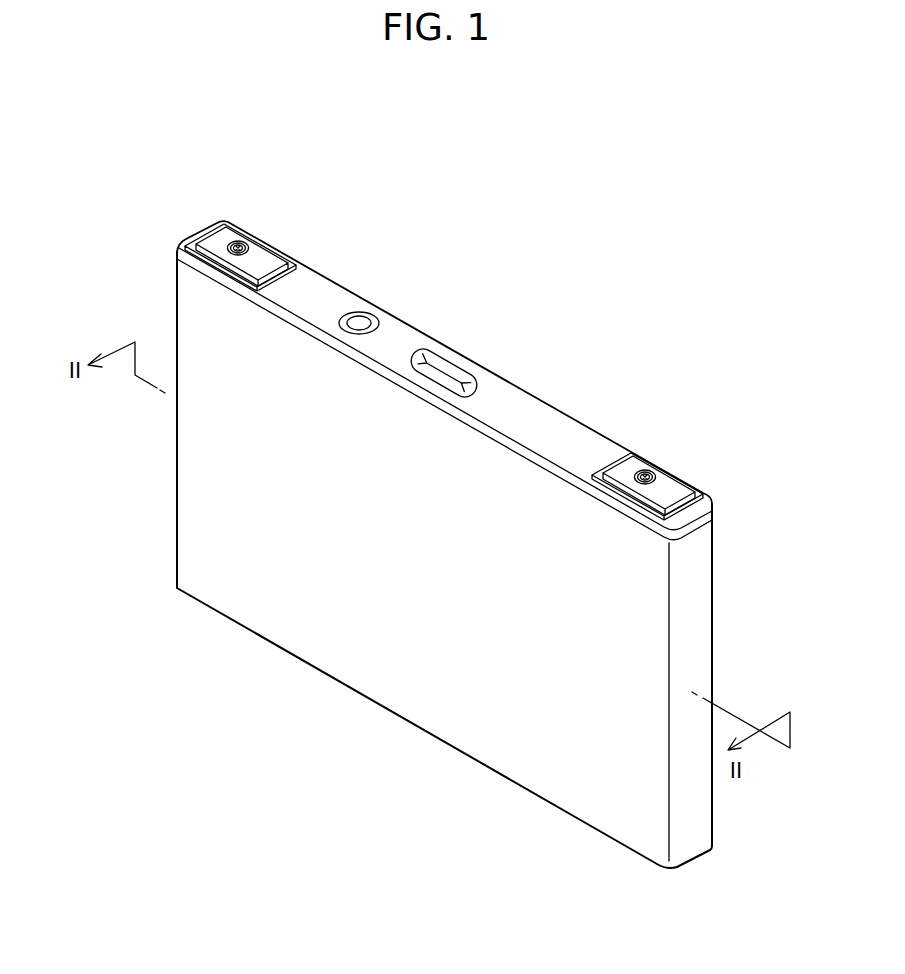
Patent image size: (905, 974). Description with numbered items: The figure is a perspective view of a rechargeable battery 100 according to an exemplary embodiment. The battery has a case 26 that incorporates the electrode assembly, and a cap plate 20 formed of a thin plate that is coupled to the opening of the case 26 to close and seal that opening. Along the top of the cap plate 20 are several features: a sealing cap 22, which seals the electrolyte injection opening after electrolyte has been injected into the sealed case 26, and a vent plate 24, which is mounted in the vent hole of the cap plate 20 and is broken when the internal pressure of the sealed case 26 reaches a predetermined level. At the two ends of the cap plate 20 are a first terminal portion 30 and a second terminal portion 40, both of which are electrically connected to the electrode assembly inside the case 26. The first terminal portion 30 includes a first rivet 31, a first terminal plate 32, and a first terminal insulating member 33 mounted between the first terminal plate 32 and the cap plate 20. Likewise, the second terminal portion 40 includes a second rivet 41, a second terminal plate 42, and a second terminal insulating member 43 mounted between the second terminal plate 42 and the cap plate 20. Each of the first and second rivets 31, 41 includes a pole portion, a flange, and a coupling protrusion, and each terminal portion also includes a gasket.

The rechargeable battery 100 is at (503, 171).
The cap plate 20 is at (528, 410).
The sealing cap 22 is at (366, 318).
The vent plate 24 is at (452, 375).
The case 26 is at (405, 690).
The first terminal portion 30 is at (260, 226).
The first rivet 31 is at (248, 218).
The first terminal plate 32 is at (262, 253).
The first terminal insulating member 33 is at (288, 266).
The second terminal portion 40 is at (667, 455).
The second rivet 41 is at (655, 447).
The second terminal plate 42 is at (654, 472).
The second terminal insulating member 43 is at (664, 484).